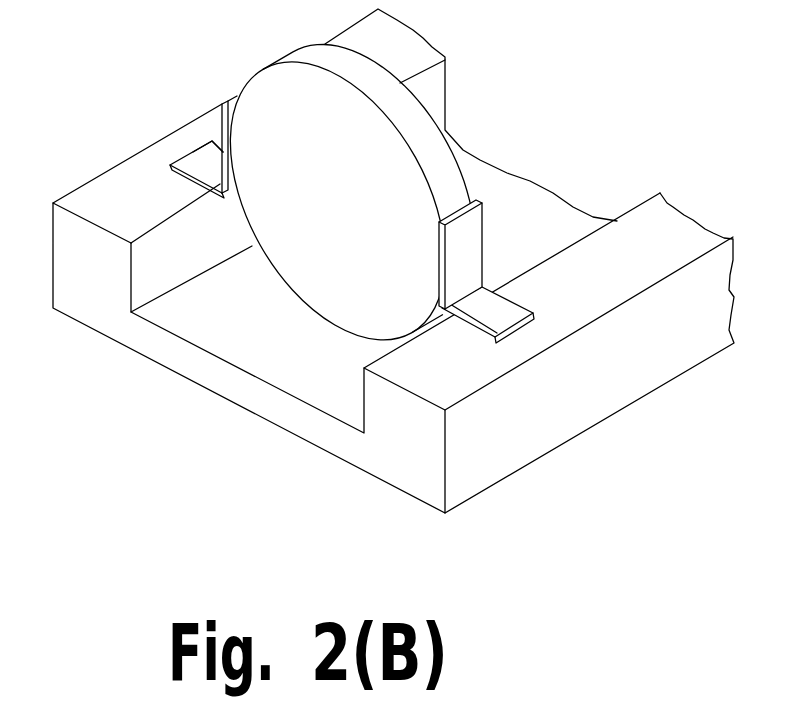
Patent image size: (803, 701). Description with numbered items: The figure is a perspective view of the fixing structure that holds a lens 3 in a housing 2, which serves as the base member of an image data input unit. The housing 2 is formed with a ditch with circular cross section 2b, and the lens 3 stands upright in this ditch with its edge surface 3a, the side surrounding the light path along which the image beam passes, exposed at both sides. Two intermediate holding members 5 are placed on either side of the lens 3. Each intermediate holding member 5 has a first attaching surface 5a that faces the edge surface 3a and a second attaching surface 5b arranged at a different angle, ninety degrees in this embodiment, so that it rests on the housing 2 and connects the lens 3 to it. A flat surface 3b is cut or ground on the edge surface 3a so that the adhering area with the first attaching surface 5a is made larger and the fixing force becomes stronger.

The housing 2 is at (572, 398).
The ditch with circular cross section 2b is at (268, 343).
The lens 3 is at (424, 107).
The edge surface 3a is at (421, 157).
The flat surface 3b is at (195, 156).
The intermediate holding member 5 is at (331, 263).
The first attaching surface 5a is at (236, 120).
The second attaching surface 5b is at (200, 187).